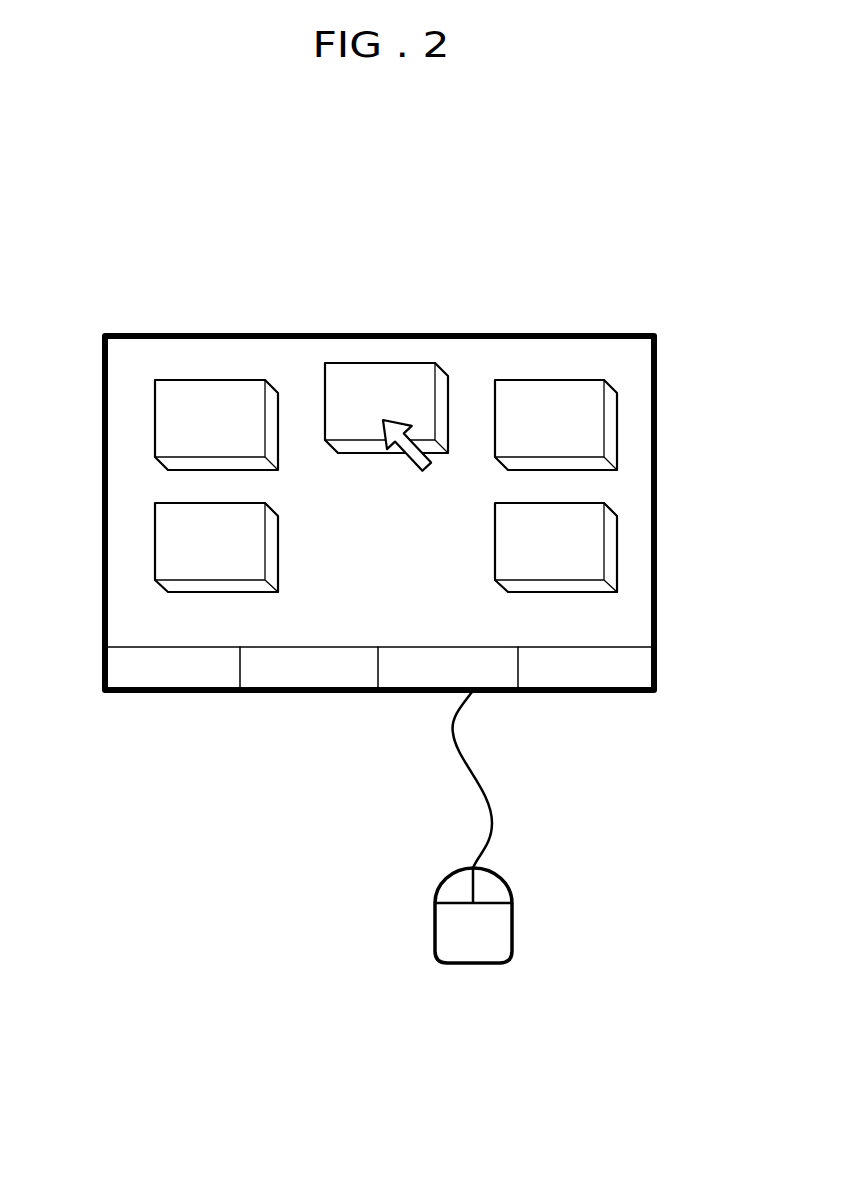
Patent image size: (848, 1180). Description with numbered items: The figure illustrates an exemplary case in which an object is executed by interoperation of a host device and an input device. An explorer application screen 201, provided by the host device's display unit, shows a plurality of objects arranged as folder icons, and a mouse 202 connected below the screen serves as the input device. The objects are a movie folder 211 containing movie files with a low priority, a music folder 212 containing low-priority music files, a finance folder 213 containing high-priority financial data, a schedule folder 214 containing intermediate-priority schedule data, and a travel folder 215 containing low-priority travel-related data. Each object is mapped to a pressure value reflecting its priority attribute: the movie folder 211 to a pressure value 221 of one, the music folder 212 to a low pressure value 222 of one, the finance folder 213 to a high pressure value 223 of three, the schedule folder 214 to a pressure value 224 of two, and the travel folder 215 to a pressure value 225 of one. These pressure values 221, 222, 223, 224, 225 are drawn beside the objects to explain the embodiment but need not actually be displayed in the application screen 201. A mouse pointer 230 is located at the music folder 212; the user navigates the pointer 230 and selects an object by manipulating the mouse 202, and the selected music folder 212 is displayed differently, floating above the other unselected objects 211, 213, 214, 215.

The application screen 201 is at (157, 333).
The mouse 202 is at (512, 912).
The movie folder 211 is at (238, 380).
The music folder 212 is at (405, 363).
The finance folder 213 is at (577, 380).
The schedule folder 214 is at (155, 535).
The travel folder 215 is at (583, 517).
The pressure value 221 is at (277, 420).
The pressure value 222 is at (447, 403).
The pressure value 223 is at (617, 418).
The pressure value 224 is at (275, 550).
The pressure value 225 is at (613, 547).
The mouse pointer 230 is at (414, 462).